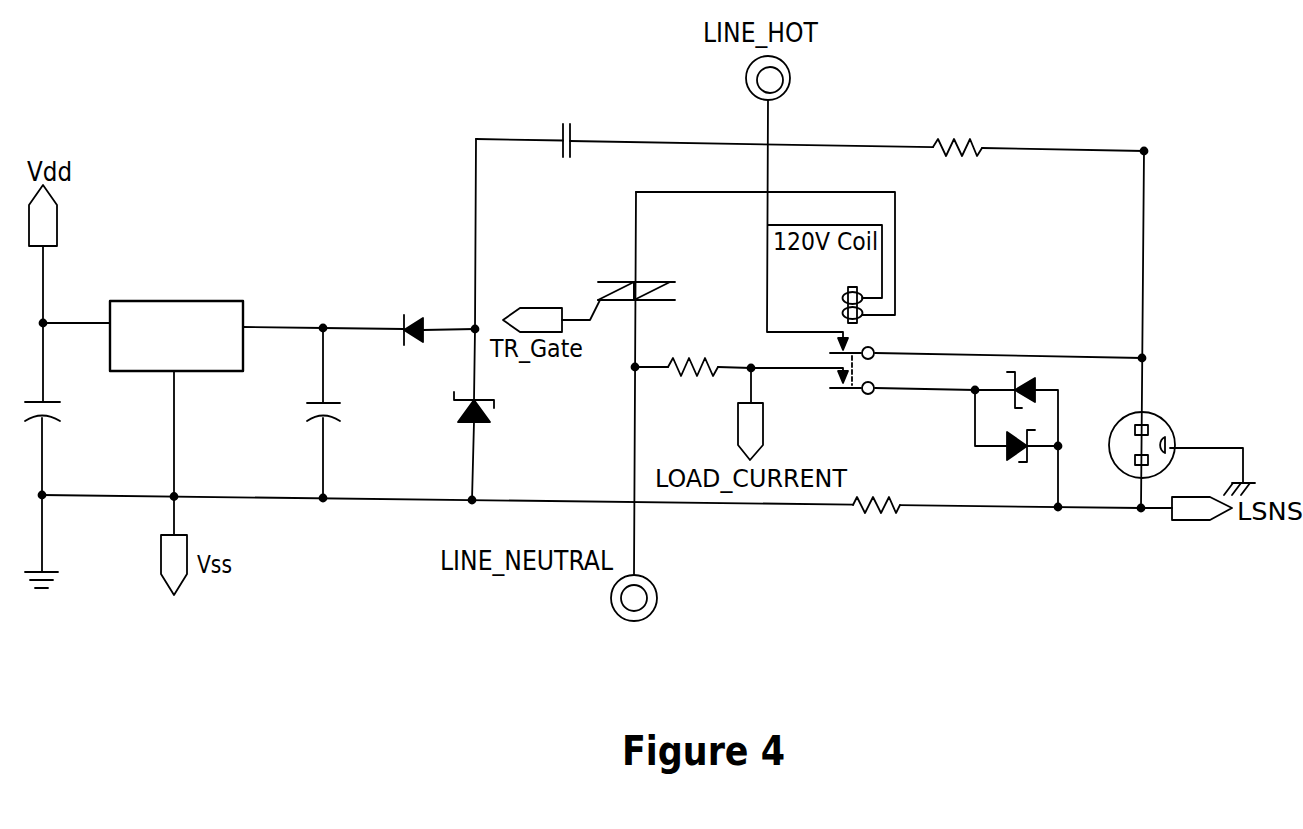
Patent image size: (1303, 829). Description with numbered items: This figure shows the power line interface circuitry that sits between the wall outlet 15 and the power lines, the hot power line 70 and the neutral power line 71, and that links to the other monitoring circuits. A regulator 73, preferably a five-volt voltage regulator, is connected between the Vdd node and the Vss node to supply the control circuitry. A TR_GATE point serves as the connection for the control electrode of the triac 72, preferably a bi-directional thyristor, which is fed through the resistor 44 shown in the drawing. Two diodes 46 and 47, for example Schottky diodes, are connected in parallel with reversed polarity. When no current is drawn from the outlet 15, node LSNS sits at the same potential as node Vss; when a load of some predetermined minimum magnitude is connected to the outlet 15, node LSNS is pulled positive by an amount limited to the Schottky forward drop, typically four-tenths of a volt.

The regulator 73 is at (229, 301).
The triac 72 is at (603, 282).
The power line (hot) 70 is at (752, 93).
The power line (neutral) 71 is at (614, 613).
The current sensing resistor 44 is at (714, 358).
The diode 46 is at (973, 392).
The diode 47 is at (1018, 465).
The wall outlet 15 is at (1163, 414).